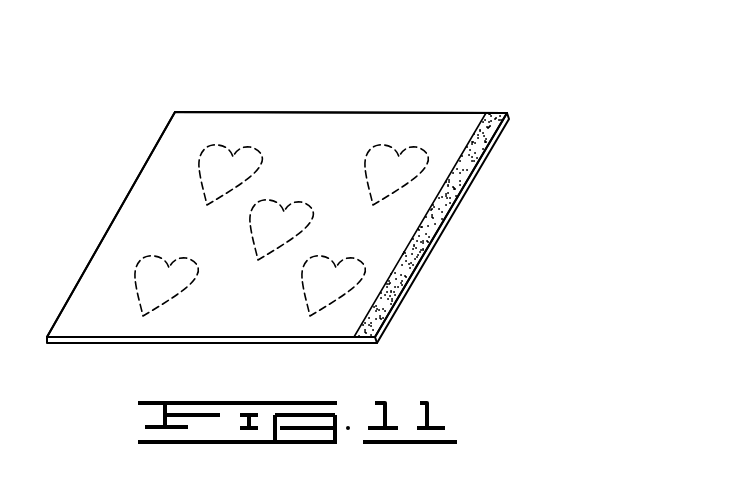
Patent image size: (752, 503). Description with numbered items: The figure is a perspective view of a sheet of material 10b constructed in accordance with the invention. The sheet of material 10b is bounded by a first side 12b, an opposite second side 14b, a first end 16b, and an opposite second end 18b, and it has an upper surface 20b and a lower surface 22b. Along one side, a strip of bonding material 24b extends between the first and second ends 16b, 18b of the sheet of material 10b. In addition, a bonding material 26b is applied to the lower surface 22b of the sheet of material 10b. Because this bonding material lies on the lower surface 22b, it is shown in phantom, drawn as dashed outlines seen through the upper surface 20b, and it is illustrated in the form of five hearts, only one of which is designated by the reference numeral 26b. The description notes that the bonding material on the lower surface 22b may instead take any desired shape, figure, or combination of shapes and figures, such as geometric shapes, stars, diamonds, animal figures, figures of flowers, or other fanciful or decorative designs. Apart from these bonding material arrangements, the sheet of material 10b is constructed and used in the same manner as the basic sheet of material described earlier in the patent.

The sheet of material 10b is at (348, 67).
The first side 12b is at (122, 206).
The second side 14b is at (433, 250).
The first end 16b is at (135, 340).
The second end 18b is at (260, 112).
The upper surface 20b is at (347, 130).
The lower surface 22b is at (282, 345).
The strip of bonding material 24b is at (490, 122).
The bonding material 26b is at (215, 148).